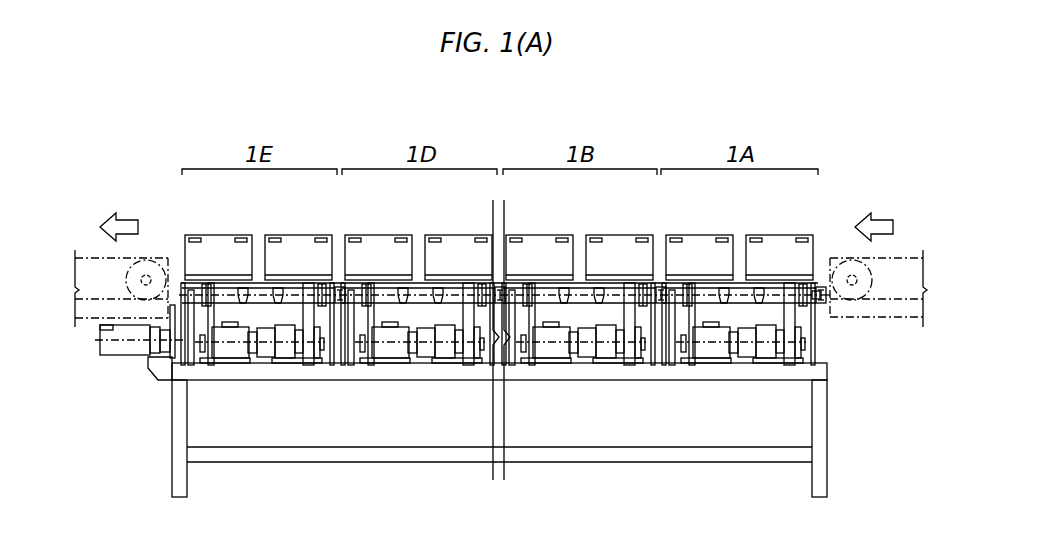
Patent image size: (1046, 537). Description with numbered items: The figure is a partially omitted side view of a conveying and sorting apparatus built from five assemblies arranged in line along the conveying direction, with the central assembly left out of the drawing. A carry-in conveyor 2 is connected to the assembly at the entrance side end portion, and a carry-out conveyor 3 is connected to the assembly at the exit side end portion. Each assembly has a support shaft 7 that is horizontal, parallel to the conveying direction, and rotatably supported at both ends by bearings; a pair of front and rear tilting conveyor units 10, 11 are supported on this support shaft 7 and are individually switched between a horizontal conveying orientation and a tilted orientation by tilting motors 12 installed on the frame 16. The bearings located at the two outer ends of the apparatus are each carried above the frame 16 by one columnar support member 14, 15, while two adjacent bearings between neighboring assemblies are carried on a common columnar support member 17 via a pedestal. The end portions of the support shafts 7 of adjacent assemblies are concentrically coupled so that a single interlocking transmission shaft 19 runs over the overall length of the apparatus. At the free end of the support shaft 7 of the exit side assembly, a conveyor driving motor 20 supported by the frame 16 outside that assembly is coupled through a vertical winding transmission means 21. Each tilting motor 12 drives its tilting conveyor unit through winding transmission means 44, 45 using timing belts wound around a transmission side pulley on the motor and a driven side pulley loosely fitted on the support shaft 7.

The carry-in conveyor 2 is at (901, 259).
The carry-out conveyor 3 is at (97, 252).
The support shaft 7 is at (258, 292).
The tilting conveyor unit 10 is at (300, 232).
The tilting conveyor unit 11 is at (220, 232).
The tilting motor 12 is at (265, 350).
The columnar support member 14 is at (810, 350).
The columnar support member 15 is at (192, 360).
The frame 16 is at (337, 355).
The common columnar support member 17 is at (340, 355).
The interlocking transmission shaft 19 is at (412, 305).
The conveyor driving motor 20 is at (132, 347).
The vertical winding transmission means 21 is at (170, 313).
The winding transmission means 44 is at (296, 320).
The winding transmission means 45 is at (210, 286).